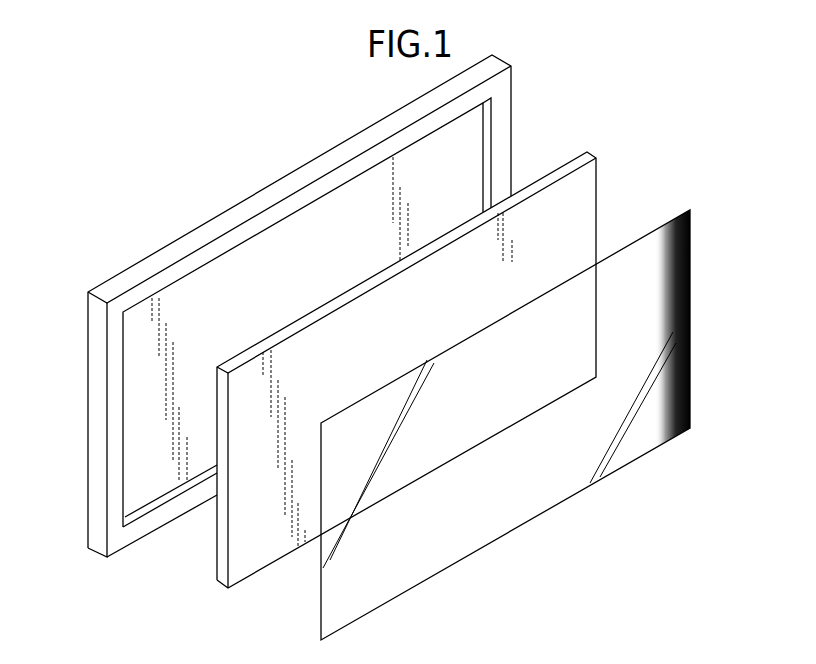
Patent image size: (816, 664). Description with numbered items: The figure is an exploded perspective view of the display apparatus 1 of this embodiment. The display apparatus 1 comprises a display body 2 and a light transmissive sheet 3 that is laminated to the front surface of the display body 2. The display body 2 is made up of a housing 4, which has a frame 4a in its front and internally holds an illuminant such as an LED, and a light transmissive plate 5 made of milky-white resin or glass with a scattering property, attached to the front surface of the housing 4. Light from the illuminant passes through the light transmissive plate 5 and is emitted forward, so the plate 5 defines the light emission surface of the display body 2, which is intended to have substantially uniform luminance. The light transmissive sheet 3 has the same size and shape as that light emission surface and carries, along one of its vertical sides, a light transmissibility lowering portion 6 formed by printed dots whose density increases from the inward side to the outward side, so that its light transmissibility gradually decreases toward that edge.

The display apparatus 1 is at (603, 118).
The display body 2 is at (178, 616).
The light transmissive sheet 3 is at (462, 549).
The housing 4 is at (163, 249).
The frame 4a is at (112, 522).
The light transmissive plate 5 is at (217, 524).
The light transmissibility lowering portion 6 is at (703, 194).